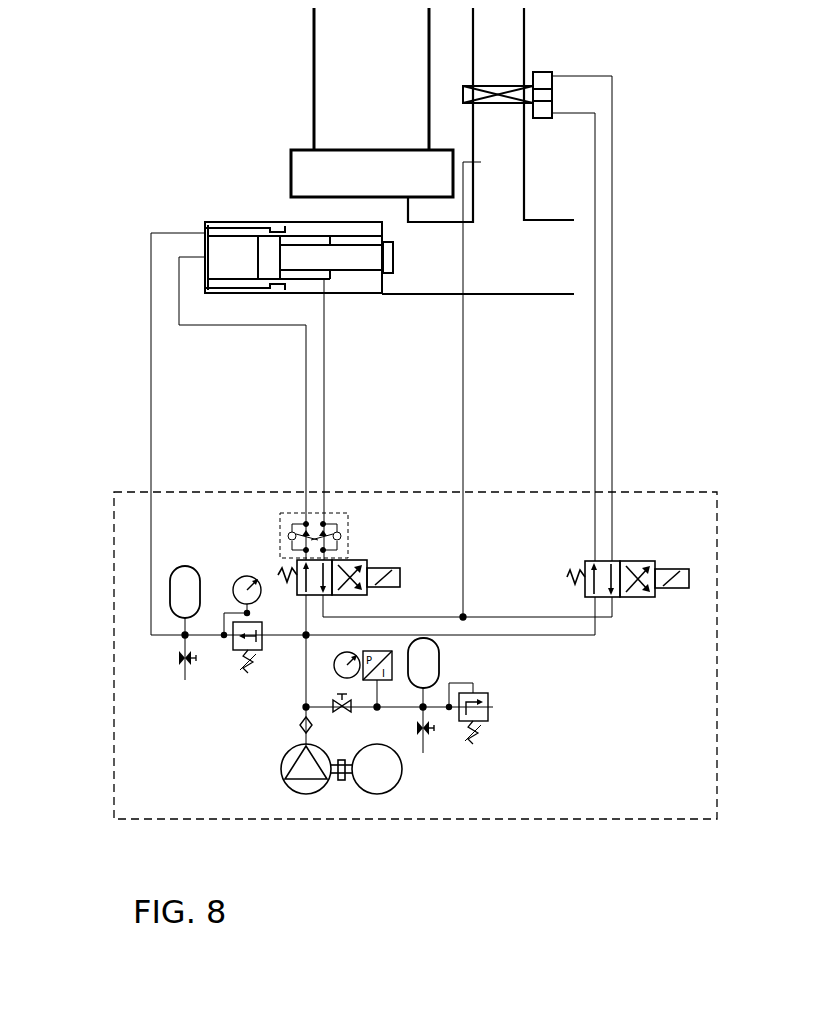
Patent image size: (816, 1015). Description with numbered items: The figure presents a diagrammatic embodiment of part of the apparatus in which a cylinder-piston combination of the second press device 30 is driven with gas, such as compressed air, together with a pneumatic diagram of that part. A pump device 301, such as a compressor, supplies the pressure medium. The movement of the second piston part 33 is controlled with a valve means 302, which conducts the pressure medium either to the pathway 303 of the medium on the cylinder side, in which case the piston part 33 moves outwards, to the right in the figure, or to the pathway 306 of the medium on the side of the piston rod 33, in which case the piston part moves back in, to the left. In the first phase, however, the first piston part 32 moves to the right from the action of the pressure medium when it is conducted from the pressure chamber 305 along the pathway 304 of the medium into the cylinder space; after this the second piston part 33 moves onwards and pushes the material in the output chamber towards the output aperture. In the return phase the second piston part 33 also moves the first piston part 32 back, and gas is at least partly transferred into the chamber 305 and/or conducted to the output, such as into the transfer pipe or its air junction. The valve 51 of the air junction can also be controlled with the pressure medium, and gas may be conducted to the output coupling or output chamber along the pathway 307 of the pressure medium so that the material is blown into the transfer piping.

The second press device 30 is at (163, 183).
The first piston part 32 is at (355, 225).
The second piston part 33 is at (345, 253).
The valve of the air junction 51 is at (533, 85).
The pump device 301 is at (302, 794).
The valve means 302 is at (358, 560).
The pathway of the medium 303 is at (307, 377).
The pathway of the medium 304 is at (151, 443).
The pressure chamber 305 is at (187, 567).
The pathway of the medium 306 is at (322, 410).
The pathway of the pressure medium 307 is at (463, 410).